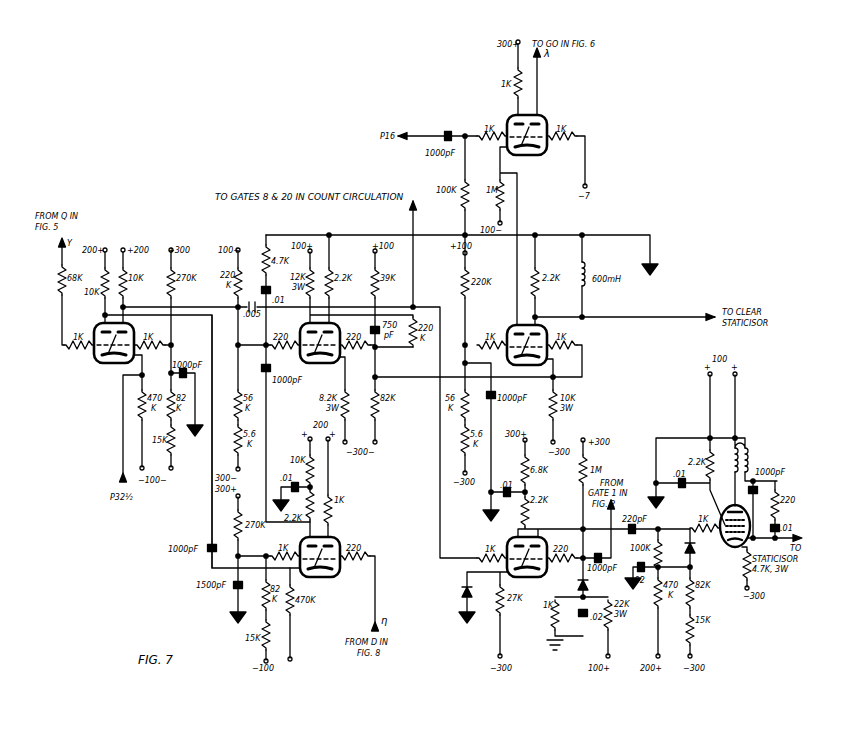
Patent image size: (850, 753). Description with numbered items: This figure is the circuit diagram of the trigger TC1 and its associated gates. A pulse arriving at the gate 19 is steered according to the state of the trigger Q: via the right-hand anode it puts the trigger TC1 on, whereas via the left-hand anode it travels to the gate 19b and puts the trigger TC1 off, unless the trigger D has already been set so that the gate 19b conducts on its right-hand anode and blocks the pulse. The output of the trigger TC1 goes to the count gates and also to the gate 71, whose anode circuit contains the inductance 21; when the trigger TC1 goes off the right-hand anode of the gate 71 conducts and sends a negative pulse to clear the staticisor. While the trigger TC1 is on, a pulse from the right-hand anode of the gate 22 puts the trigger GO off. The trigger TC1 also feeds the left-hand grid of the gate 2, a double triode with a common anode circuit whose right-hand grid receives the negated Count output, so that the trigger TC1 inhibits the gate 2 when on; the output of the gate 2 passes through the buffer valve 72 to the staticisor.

The gate 2 is at (509, 541).
The gate 19 is at (96, 357).
The gate 19b is at (339, 542).
The inductance 21 is at (586, 273).
The gate 22 is at (547, 118).
The gate 71 is at (508, 329).
The buffer valve 72 is at (726, 509).
The trigger TC1 is at (340, 351).